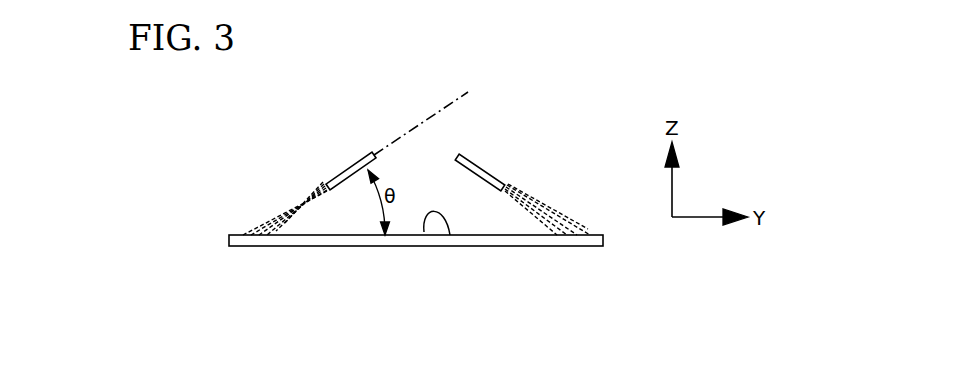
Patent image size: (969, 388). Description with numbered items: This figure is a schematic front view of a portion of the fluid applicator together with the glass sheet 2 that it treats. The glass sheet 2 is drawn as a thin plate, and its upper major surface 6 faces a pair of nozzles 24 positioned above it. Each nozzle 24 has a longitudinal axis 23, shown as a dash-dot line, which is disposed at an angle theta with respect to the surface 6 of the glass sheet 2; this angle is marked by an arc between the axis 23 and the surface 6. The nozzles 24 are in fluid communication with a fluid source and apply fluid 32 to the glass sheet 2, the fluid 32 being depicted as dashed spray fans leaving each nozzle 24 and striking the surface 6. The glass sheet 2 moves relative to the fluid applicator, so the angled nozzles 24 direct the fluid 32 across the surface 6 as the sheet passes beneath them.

The glass sheet 2 is at (545, 251).
The major surface 6 is at (424, 232).
The longitudinal axis 23 is at (440, 111).
The nozzle 24 is at (350, 168).
The fluid 32 is at (281, 213).